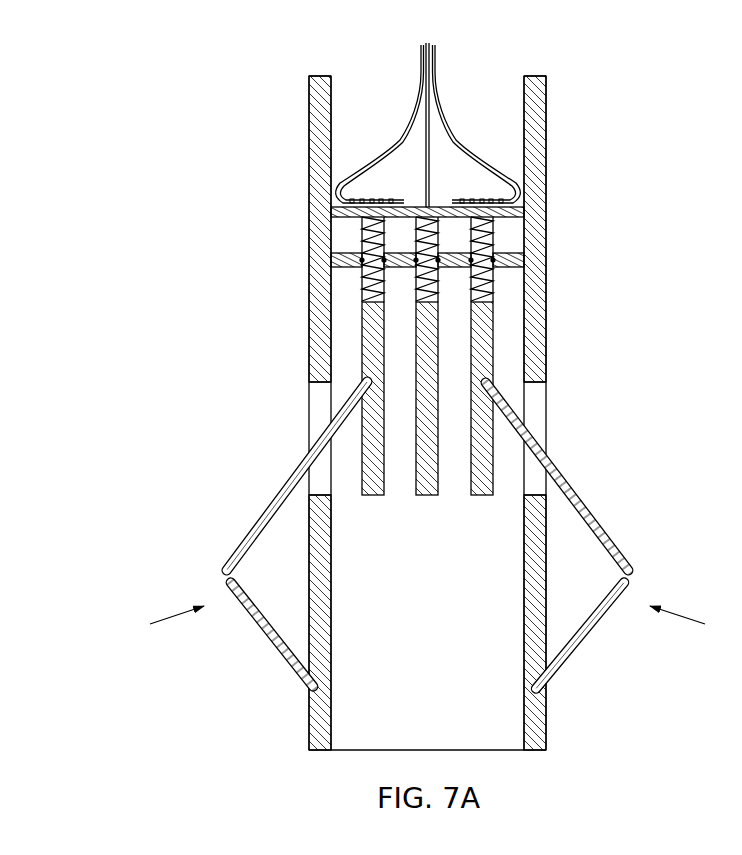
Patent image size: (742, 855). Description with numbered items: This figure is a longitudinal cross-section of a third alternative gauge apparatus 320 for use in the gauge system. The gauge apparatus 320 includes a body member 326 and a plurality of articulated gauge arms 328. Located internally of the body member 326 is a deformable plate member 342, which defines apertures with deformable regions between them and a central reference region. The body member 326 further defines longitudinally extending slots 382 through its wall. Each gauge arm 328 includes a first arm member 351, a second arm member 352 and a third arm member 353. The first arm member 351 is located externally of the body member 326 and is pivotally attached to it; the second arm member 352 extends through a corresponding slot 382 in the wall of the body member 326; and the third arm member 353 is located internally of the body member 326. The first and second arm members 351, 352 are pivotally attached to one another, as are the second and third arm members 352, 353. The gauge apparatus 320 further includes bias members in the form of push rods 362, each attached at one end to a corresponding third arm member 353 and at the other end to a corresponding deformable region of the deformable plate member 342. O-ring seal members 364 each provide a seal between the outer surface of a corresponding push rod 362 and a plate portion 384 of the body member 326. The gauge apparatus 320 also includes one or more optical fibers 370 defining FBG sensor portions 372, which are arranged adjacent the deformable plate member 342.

The gauge apparatus 320 is at (399, 419).
The body member 326 is at (309, 136).
The gauge arm 328 is at (427, 623).
The deformable plate member 342 is at (516, 207).
The first arm member 351 is at (266, 640).
The second arm member 352 is at (262, 513).
The third arm member 353 is at (373, 496).
The push rod 362 is at (362, 240).
The O-ring seal member 364 is at (428, 416).
The optical fiber 370 is at (397, 136).
The FBG sensor portion 372 is at (373, 198).
The slot 382 is at (309, 404).
The retaining plate 384 is at (354, 259).